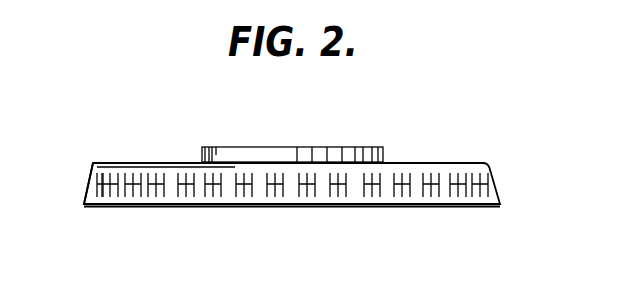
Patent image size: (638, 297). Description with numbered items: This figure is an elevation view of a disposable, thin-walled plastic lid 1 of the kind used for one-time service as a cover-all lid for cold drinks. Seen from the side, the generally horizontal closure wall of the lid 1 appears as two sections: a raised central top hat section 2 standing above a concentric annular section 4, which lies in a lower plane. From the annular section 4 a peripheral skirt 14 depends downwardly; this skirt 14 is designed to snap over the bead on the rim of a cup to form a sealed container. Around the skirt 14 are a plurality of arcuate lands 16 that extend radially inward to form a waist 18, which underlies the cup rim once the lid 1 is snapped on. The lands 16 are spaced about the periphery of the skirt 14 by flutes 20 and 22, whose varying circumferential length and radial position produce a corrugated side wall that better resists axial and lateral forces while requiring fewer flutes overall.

The lid 1 is at (280, 170).
The top hat section 2 is at (355, 148).
The annular section 4 is at (465, 163).
The peripheral skirt 14 is at (93, 165).
The arcuate lands 16 is at (412, 163).
The waist 18 is at (440, 165).
The flute 20 is at (418, 173).
The flute 22 is at (376, 176).